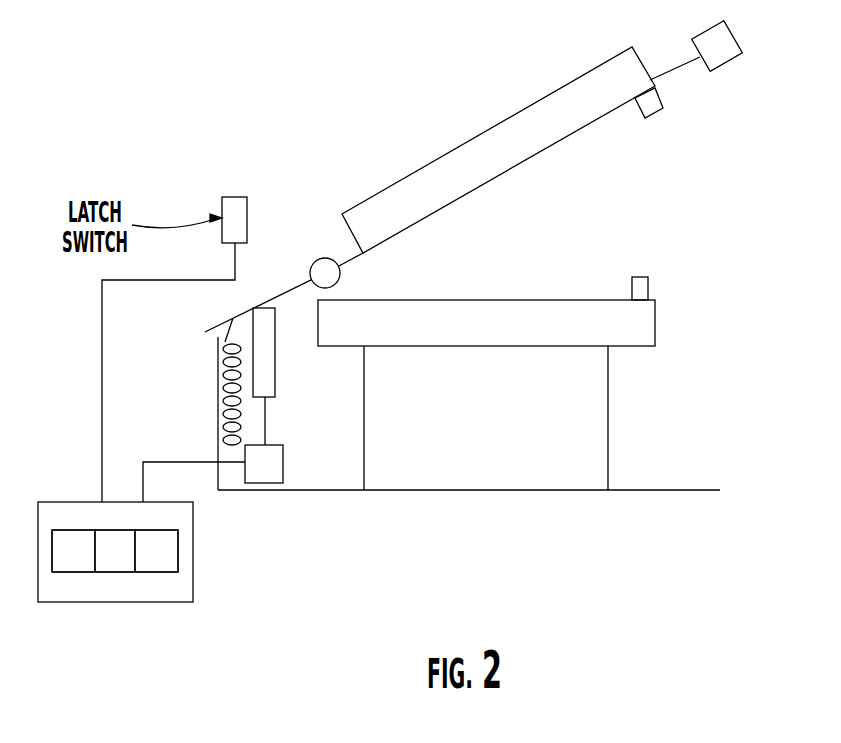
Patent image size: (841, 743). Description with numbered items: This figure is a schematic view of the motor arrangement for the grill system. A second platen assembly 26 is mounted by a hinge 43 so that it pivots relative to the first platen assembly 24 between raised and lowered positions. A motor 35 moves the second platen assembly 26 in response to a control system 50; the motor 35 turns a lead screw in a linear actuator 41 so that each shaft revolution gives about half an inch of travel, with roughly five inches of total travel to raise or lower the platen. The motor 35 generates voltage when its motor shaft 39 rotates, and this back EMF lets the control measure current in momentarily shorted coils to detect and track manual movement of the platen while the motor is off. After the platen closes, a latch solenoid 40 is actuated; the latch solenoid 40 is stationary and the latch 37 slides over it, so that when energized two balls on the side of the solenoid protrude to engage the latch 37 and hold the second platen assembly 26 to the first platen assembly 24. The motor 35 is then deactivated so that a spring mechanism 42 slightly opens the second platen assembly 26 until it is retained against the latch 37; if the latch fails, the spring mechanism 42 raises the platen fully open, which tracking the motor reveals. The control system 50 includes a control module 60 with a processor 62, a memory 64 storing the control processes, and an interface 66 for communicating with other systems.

The first platen assembly 24 is at (493, 337).
The second platen assembly 26 is at (462, 189).
The motor 35 is at (283, 462).
The latch 37 is at (664, 108).
The motor shaft 39 is at (265, 415).
The latch solenoid 40 is at (648, 289).
The linear actuator 41 is at (282, 365).
The spring mechanism 42 is at (219, 378).
The hinge 43 is at (322, 256).
The control system 50 is at (193, 587).
The control module 60 is at (70, 576).
The processor 62 is at (115, 551).
The memory 64 is at (156, 551).
The interface 66 is at (73, 551).